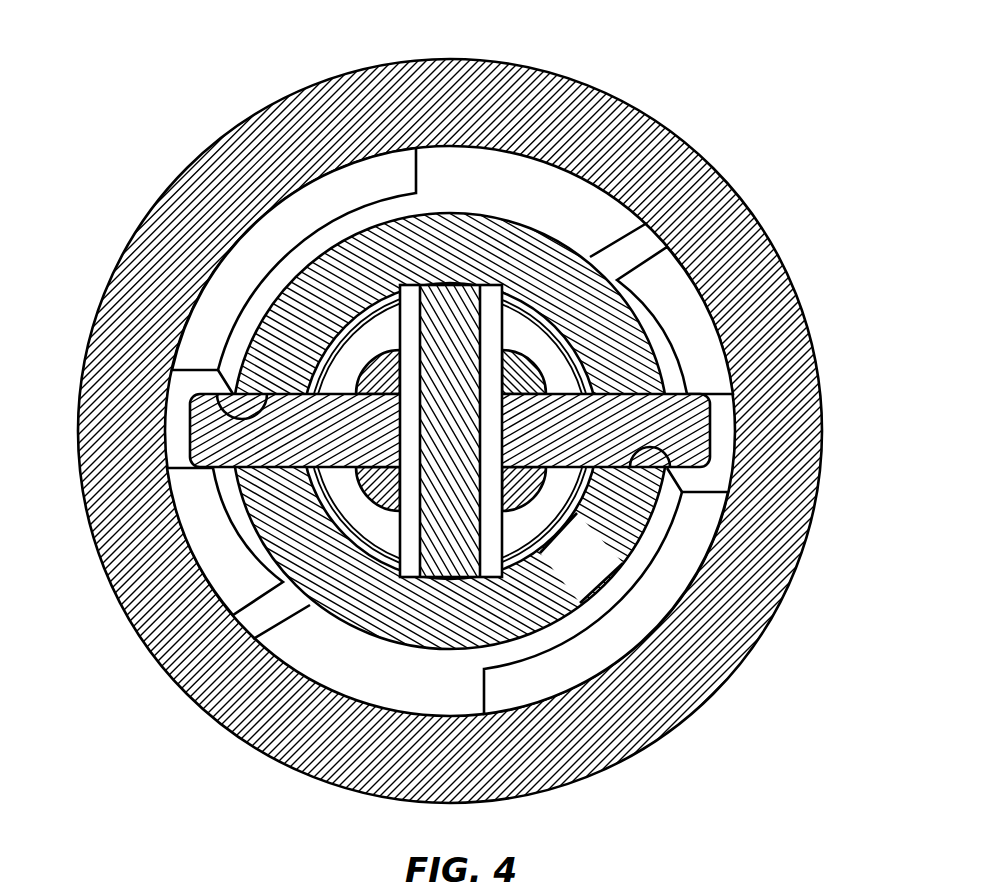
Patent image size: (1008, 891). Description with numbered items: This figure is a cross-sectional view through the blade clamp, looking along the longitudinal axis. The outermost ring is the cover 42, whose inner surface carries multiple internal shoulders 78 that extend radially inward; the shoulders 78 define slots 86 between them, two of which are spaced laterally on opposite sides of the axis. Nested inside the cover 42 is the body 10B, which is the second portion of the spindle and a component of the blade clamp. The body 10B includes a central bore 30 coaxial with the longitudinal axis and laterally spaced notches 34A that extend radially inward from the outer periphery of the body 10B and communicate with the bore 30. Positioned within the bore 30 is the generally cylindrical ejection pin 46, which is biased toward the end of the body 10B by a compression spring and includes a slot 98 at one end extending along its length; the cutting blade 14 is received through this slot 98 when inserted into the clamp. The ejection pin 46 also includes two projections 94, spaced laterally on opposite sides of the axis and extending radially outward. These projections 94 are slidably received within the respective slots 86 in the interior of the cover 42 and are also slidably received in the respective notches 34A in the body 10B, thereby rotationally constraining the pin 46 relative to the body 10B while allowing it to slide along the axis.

The body 10B is at (462, 416).
The cutting blade 14 is at (420, 217).
The bore 30 is at (358, 318).
The notches 34A is at (233, 390).
The cover 42 is at (797, 437).
The ejection pin 46 is at (368, 548).
The internal shoulders 78 is at (252, 260).
The slots 86 is at (184, 396).
The projections 94 is at (203, 440).
The slot 98 is at (492, 352).